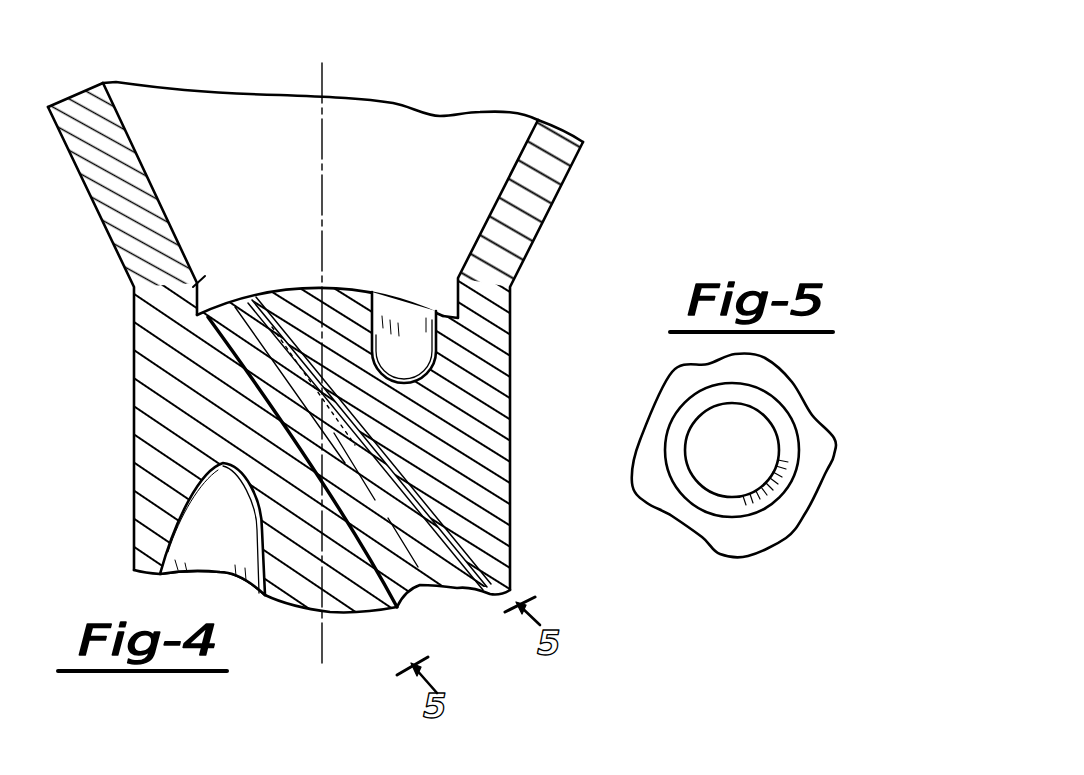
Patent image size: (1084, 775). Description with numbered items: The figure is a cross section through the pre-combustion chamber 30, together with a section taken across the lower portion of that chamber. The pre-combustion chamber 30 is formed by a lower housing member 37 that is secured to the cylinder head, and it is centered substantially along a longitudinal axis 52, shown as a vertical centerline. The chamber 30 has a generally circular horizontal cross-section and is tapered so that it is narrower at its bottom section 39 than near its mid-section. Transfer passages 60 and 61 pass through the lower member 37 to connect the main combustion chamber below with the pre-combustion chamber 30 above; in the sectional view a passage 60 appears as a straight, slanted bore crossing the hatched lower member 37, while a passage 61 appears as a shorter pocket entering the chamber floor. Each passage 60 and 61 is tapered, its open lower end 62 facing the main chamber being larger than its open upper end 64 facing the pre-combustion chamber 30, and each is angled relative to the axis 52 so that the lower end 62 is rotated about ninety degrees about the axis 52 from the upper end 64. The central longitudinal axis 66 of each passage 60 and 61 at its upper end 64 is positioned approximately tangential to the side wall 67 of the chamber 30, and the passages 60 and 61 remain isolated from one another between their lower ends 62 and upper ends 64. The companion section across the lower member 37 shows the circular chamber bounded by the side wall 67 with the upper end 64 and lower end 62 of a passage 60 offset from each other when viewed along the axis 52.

In FIG. 4, the pre-combustion chamber 30 is at (302, 346).
In FIG. 4, the lower housing member 37 is at (92, 204).
In FIG. 5, the lower housing member 37 is at (765, 530).
In FIG. 4, the bottom section 39 is at (197, 282).
In FIG. 4, the longitudinal axis 52 is at (325, 163).
In FIG. 4, the transfer passage 60 is at (207, 507).
In FIG. 5, the transfer passage 60 is at (752, 445).
In FIG. 4, the transfer passage 61 is at (417, 330).
In FIG. 4, the lower end 62 is at (228, 582).
In FIG. 5, the lower end 62 is at (790, 473).
In FIG. 4, the upper end 64 is at (250, 307).
In FIG. 5, the upper end 64 is at (752, 413).
In FIG. 4, the central longitudinal axis 66 is at (418, 573).
In FIG. 4, the side wall 67 is at (157, 190).